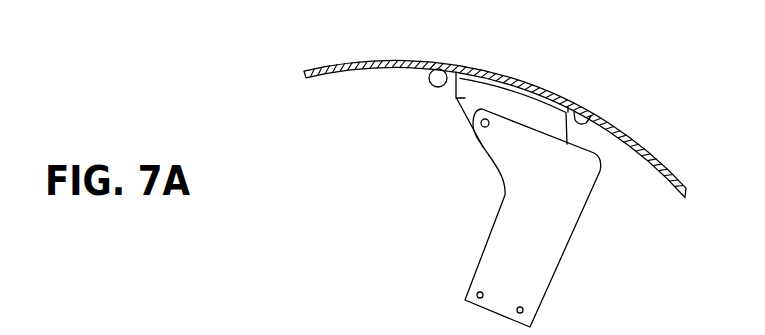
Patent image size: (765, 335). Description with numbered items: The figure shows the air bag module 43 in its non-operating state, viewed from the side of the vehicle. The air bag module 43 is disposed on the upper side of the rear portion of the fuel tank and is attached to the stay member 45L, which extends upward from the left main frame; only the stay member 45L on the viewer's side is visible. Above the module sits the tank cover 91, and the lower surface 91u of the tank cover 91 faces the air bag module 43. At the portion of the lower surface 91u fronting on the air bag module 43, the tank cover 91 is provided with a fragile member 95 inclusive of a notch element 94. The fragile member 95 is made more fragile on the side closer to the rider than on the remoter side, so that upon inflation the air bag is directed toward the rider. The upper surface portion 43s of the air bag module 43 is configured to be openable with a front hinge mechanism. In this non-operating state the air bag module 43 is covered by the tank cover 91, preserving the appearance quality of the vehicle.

The tank cover 91 is at (630, 136).
The lower surface of the tank cover 91u is at (629, 146).
The air bag module 43 is at (485, 95).
The upper surface portion of the air bag module 43s is at (503, 73).
The notch element 94 is at (437, 69).
The fragile member 95 is at (595, 111).
The stay member 45L is at (505, 248).